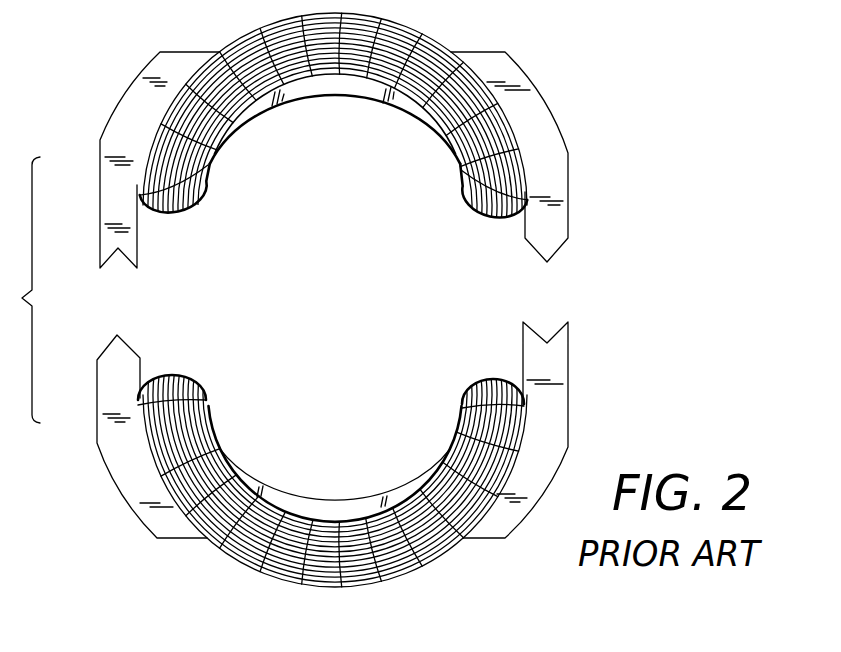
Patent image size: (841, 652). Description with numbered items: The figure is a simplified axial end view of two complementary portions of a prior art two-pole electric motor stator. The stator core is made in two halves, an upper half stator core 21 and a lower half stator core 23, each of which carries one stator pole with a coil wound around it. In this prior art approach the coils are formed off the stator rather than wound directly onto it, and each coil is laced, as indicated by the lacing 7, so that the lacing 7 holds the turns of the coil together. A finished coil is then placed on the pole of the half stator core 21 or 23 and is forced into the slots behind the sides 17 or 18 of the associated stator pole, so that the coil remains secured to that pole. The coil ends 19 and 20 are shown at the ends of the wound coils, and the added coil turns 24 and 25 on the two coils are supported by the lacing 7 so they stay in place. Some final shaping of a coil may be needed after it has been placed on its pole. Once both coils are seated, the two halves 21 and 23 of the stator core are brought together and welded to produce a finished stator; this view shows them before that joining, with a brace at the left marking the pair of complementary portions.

The lacing 7 is at (413, 65).
The side of stator pole 17 is at (250, 110).
The side of stator pole 18 is at (251, 473).
The upper coil end portions 19 is at (202, 163).
The lower coil end portions 20 is at (208, 437).
The half stator core 21 is at (140, 103).
The half stator core 23 is at (116, 478).
The added coil turns 24 is at (207, 205).
The added coil turns 25 is at (214, 386).